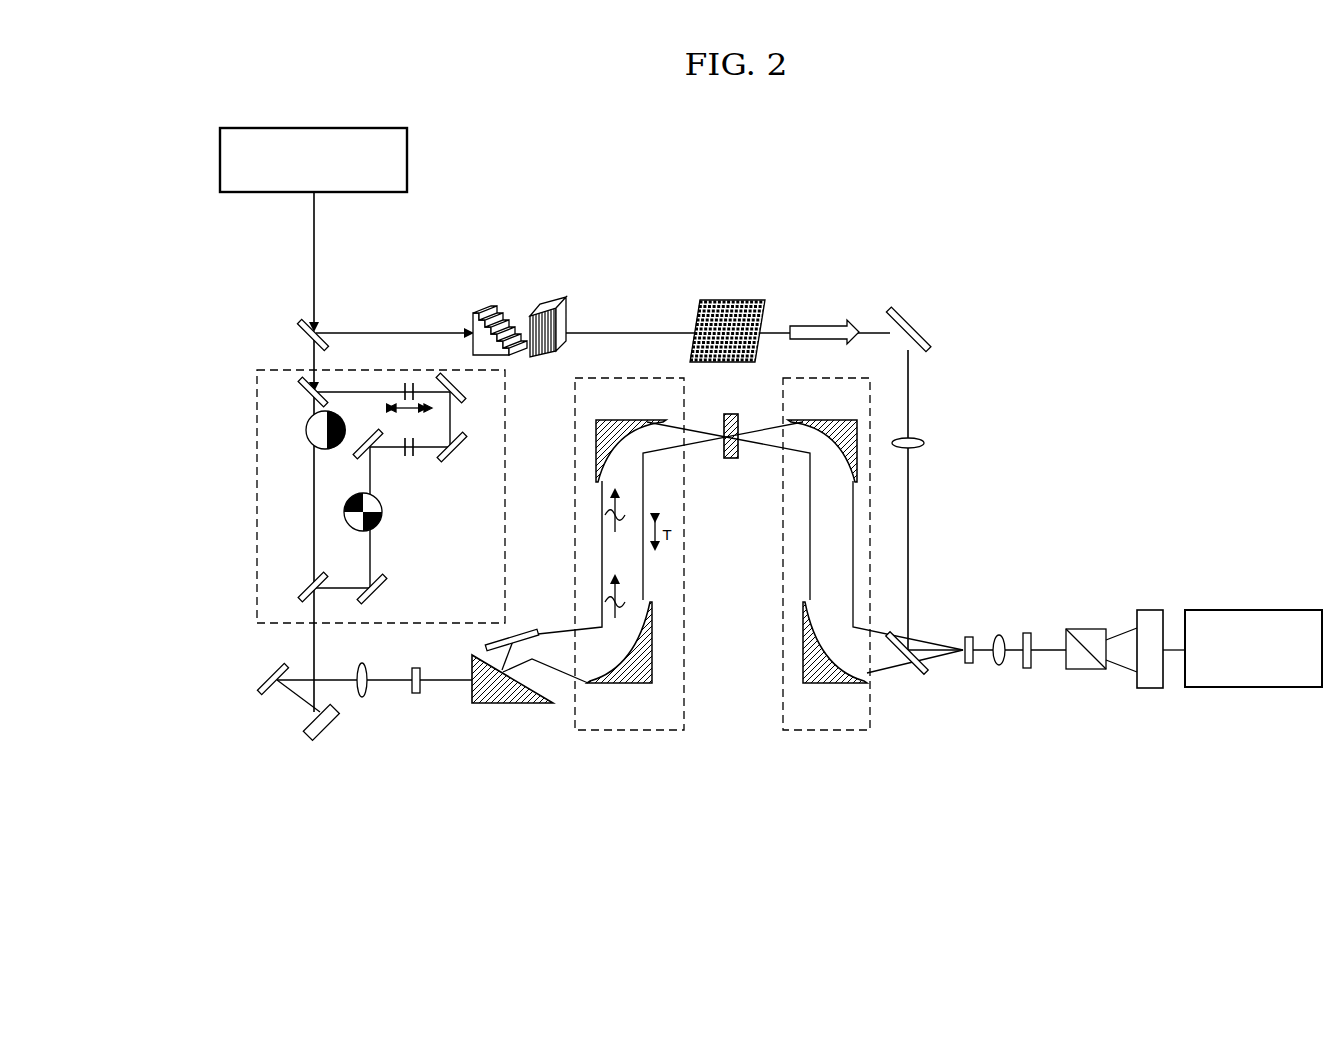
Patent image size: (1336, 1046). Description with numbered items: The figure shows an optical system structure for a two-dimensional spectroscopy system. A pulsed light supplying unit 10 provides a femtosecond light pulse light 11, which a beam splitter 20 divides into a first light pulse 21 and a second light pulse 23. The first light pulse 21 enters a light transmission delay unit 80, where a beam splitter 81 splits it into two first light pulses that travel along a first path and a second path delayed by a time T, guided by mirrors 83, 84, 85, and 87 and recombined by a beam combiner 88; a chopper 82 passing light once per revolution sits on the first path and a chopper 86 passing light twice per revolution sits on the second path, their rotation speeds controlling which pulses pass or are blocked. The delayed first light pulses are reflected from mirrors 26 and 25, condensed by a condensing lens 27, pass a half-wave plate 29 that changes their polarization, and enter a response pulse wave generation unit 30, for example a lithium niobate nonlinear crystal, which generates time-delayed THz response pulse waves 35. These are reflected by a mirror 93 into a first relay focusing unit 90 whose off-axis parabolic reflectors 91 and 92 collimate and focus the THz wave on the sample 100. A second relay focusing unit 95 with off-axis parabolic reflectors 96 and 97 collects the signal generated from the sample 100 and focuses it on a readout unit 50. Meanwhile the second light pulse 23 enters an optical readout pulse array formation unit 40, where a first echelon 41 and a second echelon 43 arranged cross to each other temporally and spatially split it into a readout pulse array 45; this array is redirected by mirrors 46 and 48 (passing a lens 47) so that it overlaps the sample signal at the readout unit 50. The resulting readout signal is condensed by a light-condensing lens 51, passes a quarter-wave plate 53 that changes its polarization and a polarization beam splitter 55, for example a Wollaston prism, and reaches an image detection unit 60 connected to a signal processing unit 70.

The pulsed light supplying unit 10 is at (220, 157).
The light pulse light 11 is at (313, 243).
The beam splitter 20 is at (300, 331).
The first light pulse 21 is at (317, 357).
The second light pulse 23 is at (385, 330).
The mirror 25 is at (262, 677).
The mirror 26 is at (328, 729).
The condensing lens 27 is at (362, 662).
The half-wave plate 29 is at (416, 667).
The response pulse wave generation unit 30 is at (492, 705).
The response pulse wave 35 is at (548, 666).
The optical readout pulse array formation unit 40 is at (519, 283).
The first echelon 41 is at (488, 306).
The second echelon 43 is at (553, 306).
The readout pulse array 45 is at (733, 298).
The mirror 46 is at (925, 330).
The lens 47 is at (925, 443).
The mirror 48 is at (922, 673).
The readout unit 50 is at (968, 636).
The light-condensing lens 51 is at (999, 634).
The quarter-wave plate 53 is at (1027, 632).
The polarization beam splitter 55 is at (1087, 628).
The image detection unit 60 is at (1150, 610).
The signal processing unit 70 is at (1256, 610).
The light transmission delay unit 80 is at (353, 497).
The beam splitter 81 is at (301, 386).
The chopper 82 is at (308, 437).
The mirror 83 is at (465, 397).
The mirror 84 is at (458, 458).
The mirror 85 is at (370, 434).
The chopper 86 is at (382, 505).
The mirror 87 is at (385, 590).
The beam combiner 88 is at (305, 590).
The first relay focusing unit 90 is at (629, 582).
The off-axis parabolic reflector 91 is at (637, 684).
The off-axis parabolic reflector 92 is at (612, 419).
The mirror 93 is at (532, 633).
The second relay focusing unit 95 is at (826, 582).
The off-axis parabolic reflector 96 is at (836, 419).
The off-axis parabolic reflector 97 is at (835, 664).
The sample 100 is at (731, 460).